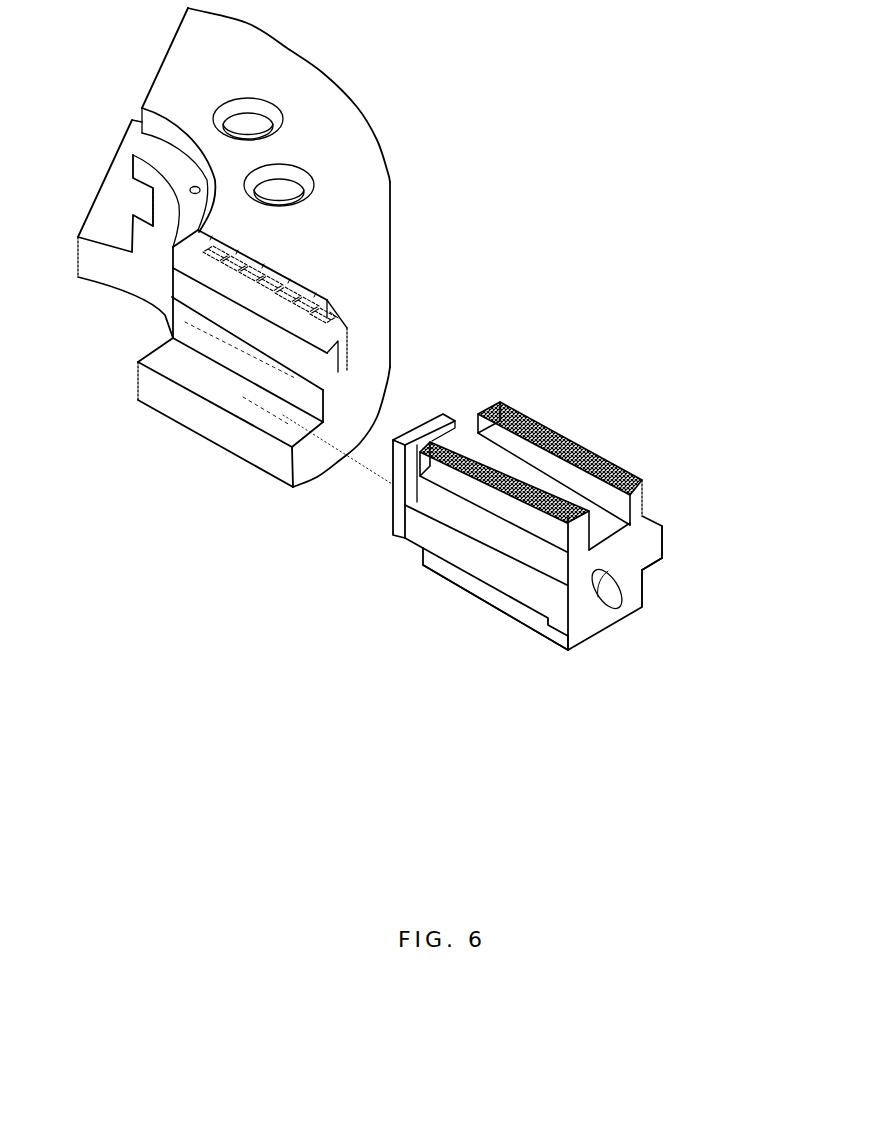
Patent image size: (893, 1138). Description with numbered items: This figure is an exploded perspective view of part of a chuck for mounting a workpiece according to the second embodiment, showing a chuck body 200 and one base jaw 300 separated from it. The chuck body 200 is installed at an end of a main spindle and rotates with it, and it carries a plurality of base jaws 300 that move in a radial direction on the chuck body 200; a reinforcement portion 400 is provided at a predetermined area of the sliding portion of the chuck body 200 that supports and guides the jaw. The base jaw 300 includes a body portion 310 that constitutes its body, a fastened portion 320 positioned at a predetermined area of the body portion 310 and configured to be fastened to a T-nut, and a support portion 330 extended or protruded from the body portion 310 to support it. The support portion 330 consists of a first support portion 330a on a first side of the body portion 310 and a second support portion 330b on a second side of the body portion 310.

The chuck body 200 is at (404, 112).
The reinforcement portion 400 is at (368, 309).
The base jaw 300 is at (640, 442).
The body portion 310 is at (629, 513).
The fastened portion 320 is at (534, 452).
The support portion 330 is at (716, 670).
The first support portion 330a is at (533, 603).
The second support portion 330b is at (645, 555).